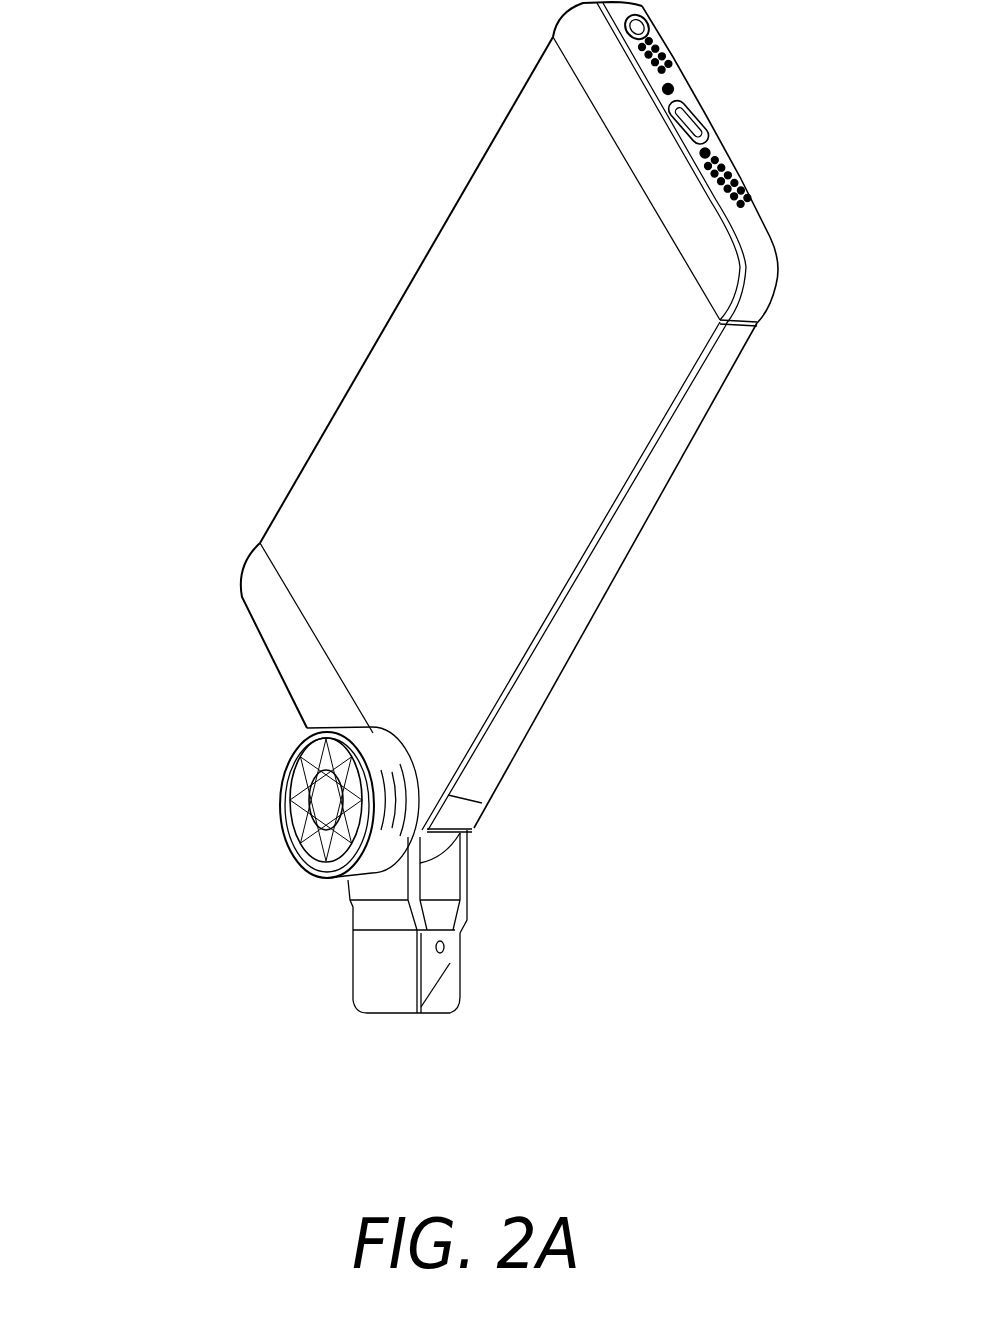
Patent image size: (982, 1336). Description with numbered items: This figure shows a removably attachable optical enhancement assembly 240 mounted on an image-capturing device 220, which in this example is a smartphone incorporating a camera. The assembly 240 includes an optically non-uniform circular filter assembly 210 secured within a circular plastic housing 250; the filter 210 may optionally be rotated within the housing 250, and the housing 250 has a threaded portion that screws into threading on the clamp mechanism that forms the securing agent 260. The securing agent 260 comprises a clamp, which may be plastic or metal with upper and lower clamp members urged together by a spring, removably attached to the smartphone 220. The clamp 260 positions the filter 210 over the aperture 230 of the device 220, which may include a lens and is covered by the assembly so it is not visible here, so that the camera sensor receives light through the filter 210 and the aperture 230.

The image-capturing device 220 is at (545, 487).
The circular plastic housing 250 is at (370, 743).
The optically non-uniform circular filter assembly 210 is at (345, 838).
The aperture 230 is at (432, 790).
The optical enhancement assembly 240 is at (392, 885).
The securing agent 260 is at (388, 970).